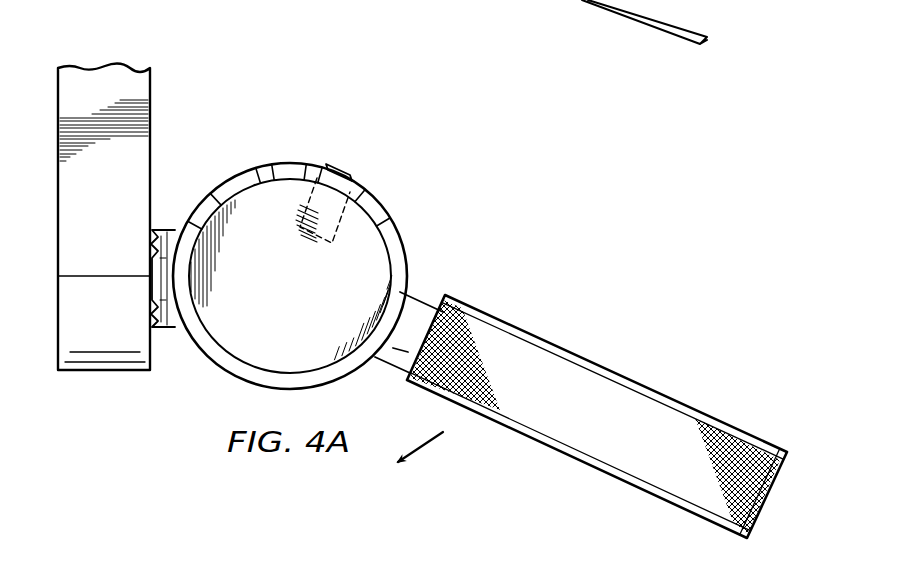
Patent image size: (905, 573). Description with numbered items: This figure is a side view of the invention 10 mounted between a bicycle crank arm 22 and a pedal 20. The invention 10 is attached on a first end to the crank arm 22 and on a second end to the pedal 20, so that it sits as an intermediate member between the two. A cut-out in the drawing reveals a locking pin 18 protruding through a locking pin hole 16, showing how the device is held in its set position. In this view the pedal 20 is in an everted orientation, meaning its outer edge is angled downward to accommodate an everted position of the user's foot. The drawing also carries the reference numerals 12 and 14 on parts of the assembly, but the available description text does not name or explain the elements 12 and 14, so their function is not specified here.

The invention 10 is at (360, 70).
The ring member 12 is at (405, 255).
The opening 14 is at (256, 346).
The locking pin hole 16 is at (250, 171).
The locking pin 18 is at (339, 167).
The pedal 20 is at (614, 374).
The crank arm 22 is at (58, 196).